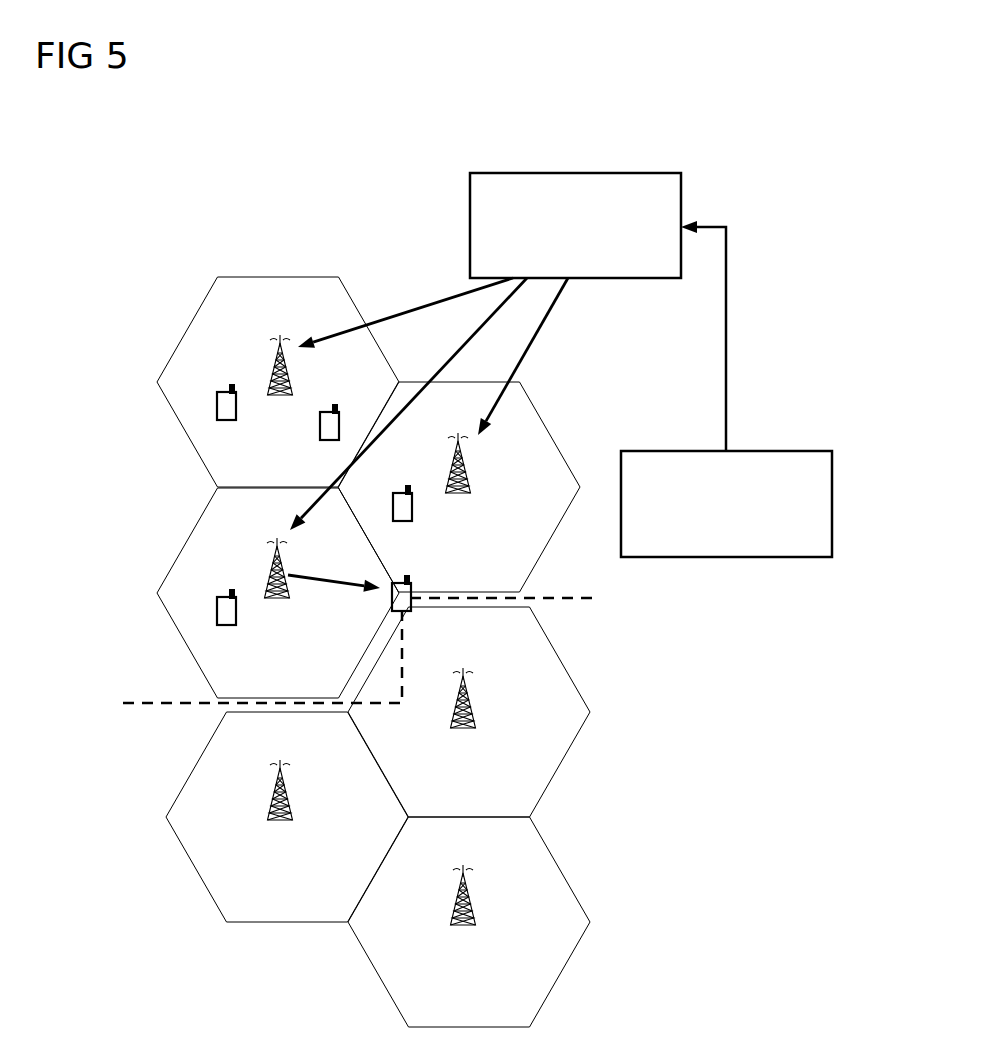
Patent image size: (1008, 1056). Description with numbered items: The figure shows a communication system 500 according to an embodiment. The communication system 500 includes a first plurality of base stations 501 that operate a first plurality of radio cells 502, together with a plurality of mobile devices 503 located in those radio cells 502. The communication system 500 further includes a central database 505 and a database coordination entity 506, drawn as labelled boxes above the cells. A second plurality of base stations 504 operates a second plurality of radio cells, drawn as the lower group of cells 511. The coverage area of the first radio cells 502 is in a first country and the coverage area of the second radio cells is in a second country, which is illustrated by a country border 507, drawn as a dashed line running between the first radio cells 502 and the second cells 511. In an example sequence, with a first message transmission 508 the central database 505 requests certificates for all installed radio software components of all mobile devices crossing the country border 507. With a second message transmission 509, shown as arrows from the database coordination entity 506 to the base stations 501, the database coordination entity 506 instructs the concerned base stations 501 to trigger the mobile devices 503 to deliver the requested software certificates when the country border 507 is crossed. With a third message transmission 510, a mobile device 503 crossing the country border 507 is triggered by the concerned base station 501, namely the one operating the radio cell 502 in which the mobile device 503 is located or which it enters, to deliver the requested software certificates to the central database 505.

The communication system 500 is at (797, 100).
The first plurality of base stations 501 is at (278, 338).
The first plurality of radio cells 502 is at (177, 348).
The mobile devices 503 is at (337, 406).
The second plurality of base stations 504 is at (283, 786).
The central database 505 is at (800, 451).
The database coordination entity 506 is at (650, 173).
The country border 507 is at (597, 600).
The first message transmission 508 is at (726, 252).
The second message transmission 509 is at (606, 338).
The third message transmission 510 is at (302, 585).
The neighbouring cell 511 is at (188, 782).